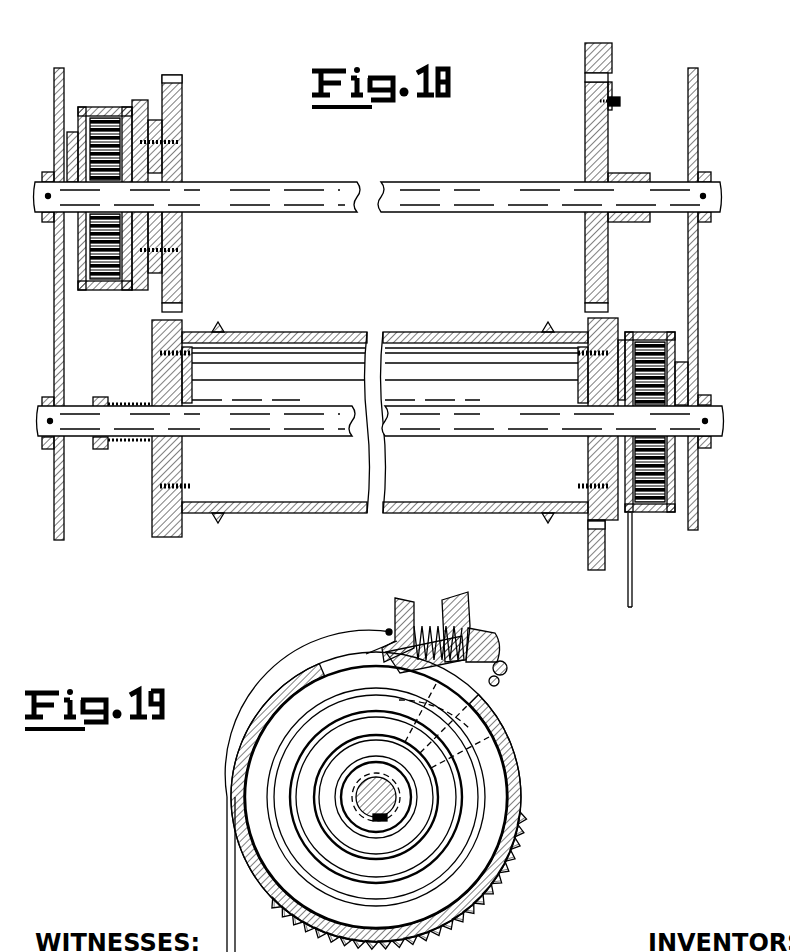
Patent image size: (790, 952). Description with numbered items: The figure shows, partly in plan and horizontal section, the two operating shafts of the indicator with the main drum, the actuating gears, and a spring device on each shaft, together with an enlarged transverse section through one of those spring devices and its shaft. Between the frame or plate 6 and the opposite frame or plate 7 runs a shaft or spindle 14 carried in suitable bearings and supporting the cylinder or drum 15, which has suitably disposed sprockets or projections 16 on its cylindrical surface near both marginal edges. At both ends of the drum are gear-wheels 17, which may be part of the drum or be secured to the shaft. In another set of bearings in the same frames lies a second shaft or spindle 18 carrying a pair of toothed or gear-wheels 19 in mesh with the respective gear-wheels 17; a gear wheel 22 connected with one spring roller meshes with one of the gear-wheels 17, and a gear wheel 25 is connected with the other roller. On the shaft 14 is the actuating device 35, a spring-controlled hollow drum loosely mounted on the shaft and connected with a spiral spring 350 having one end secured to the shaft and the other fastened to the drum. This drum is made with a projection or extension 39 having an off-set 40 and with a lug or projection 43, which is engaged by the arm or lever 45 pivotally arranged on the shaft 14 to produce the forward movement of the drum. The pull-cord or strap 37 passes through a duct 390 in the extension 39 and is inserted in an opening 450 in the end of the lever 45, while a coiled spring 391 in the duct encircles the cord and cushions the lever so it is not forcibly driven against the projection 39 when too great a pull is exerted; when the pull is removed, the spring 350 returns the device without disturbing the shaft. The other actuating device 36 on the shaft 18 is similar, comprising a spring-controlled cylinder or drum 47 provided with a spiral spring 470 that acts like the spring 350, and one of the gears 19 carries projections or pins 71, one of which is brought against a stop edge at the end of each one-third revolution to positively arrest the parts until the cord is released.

In FIG. 18, the frame or plate 6 is at (54, 345).
In FIG. 18, the frame or plate 7 is at (700, 250).
In FIG. 18, the shaft or spindle 14 is at (91, 438).
In FIG. 19, the shaft or spindle 14 is at (392, 795).
In FIG. 18, the cylinder or drum 15 is at (484, 323).
In FIG. 18, the sprockets or projections 16 is at (224, 328).
In FIG. 18, the gear-wheels 17 is at (158, 338).
In FIG. 18, the second shaft or spindle 18 is at (390, 228).
In FIG. 18, the toothed or gear-wheels 19 is at (178, 112).
In FIG. 18, the gear wheel 22 is at (590, 563).
In FIG. 18, the gear wheel 25 is at (607, 57).
In FIG. 18, the actuating device 35 is at (661, 514).
In FIG. 19, the actuating device 35 is at (520, 823).
In FIG. 18, the actuating device 36 is at (99, 179).
In FIG. 19, the pull-cord or strap 37 is at (390, 648).
In FIG. 19, the projection or extension 39 is at (457, 603).
In FIG. 19, the off-set 40 is at (425, 588).
In FIG. 19, the lug or projection 43 is at (410, 690).
In FIG. 19, the arm or lever 45 is at (472, 731).
In FIG. 18, the spring-controlled cylinder or drum 47 is at (79, 262).
In FIG. 18, the projections or pins 71 is at (621, 101).
In FIG. 18, the spiral spring 350 is at (663, 482).
In FIG. 19, the spiral spring 350 is at (463, 862).
In FIG. 19, the duct 390 is at (472, 620).
In FIG. 19, the coiled spring 391 is at (387, 629).
In FIG. 19, the opening 450 is at (504, 652).
In FIG. 18, the spiral spring 470 is at (110, 262).